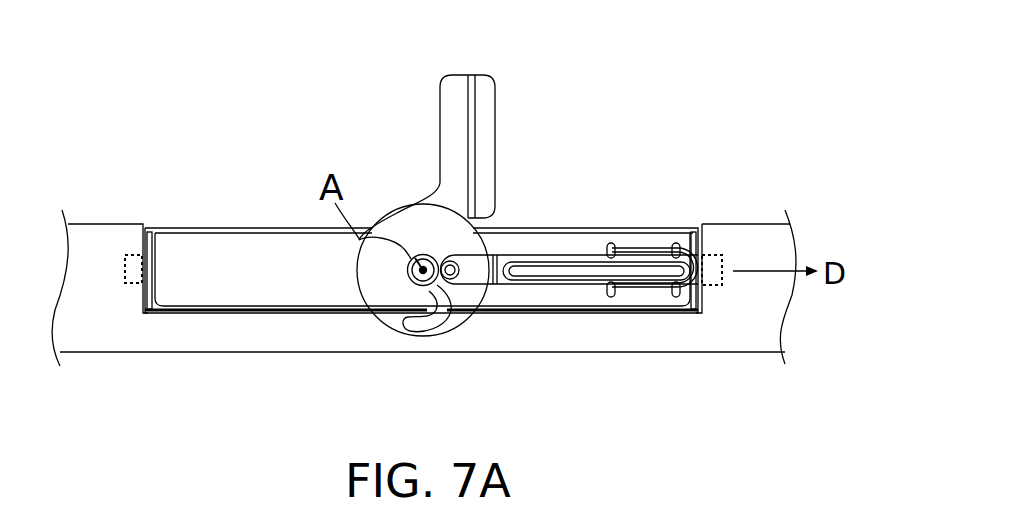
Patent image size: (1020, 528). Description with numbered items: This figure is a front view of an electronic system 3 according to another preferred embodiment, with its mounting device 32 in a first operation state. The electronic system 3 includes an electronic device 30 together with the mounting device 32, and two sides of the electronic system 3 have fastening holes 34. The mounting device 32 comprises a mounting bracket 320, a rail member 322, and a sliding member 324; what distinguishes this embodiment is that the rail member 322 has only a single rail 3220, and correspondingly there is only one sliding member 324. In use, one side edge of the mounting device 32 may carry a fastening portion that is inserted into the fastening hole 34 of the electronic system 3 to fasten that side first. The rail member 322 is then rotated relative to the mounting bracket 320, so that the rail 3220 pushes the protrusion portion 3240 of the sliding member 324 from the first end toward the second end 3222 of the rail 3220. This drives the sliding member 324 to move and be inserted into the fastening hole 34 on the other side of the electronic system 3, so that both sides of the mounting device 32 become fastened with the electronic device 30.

The electronic system 3 is at (113, 220).
The electronic device 30 is at (152, 314).
The mounting device 32 is at (700, 138).
The fastening hole 34 is at (125, 272).
The mounting bracket 320 is at (662, 228).
The rail member 322 is at (502, 148).
The sliding member 324 is at (573, 254).
The rail 3220 is at (457, 290).
The second end 3222 is at (413, 322).
The protrusion portion 3240 is at (437, 259).